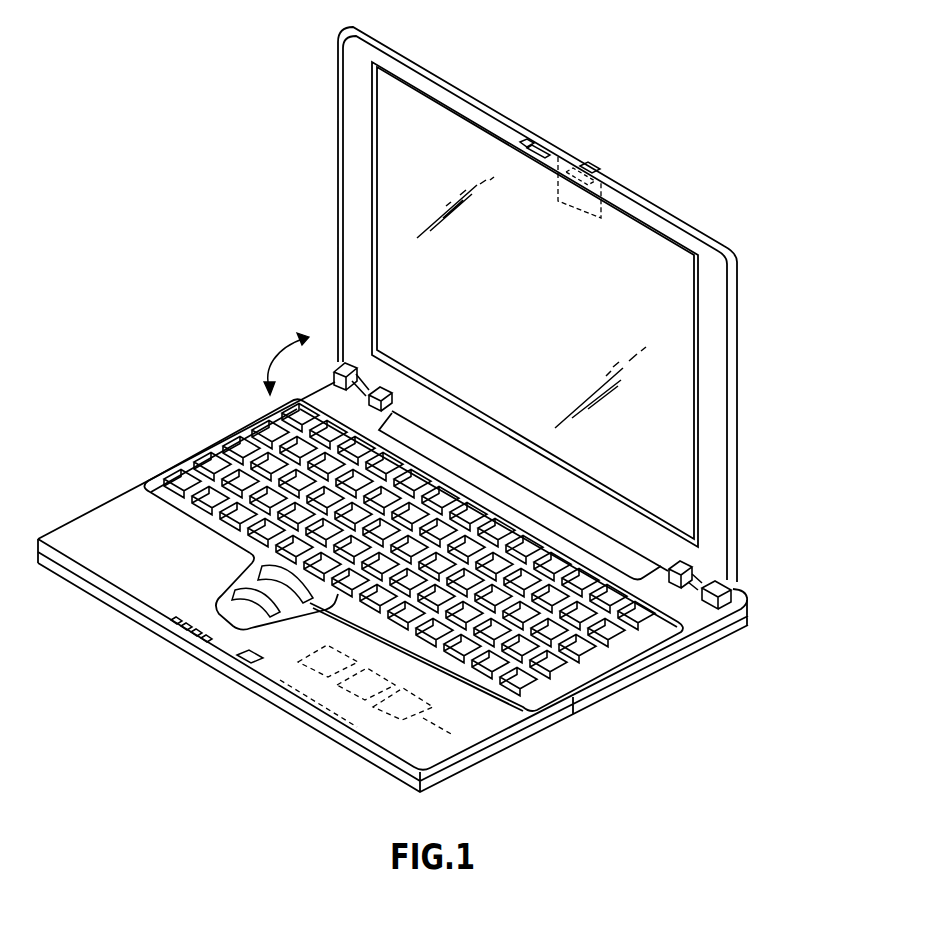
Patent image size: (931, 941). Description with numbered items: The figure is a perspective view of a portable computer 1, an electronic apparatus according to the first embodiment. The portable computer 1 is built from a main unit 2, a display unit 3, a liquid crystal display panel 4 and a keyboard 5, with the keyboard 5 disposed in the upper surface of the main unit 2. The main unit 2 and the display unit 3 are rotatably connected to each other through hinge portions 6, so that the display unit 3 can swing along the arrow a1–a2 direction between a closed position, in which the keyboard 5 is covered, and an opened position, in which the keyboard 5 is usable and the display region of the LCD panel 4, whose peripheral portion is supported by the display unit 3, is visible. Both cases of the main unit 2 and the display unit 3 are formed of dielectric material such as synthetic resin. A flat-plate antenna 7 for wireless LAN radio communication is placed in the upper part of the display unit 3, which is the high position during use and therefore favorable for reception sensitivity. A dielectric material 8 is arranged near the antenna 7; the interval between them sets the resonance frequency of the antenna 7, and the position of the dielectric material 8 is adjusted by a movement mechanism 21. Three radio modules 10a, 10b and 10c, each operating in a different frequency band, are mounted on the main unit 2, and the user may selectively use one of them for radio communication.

The portable computer 1 is at (751, 322).
The main unit 2 is at (116, 522).
The display unit 3 is at (347, 93).
The liquid crystal display panel 4 is at (392, 206).
The keyboard 5 is at (210, 465).
The hinge portions 6 is at (363, 360).
The antenna 7 is at (583, 154).
The dielectric material 8 is at (610, 182).
The movement mechanism 21 is at (593, 162).
The radio module 10a is at (267, 690).
The radio module 10b is at (305, 707).
The radio module 10c is at (340, 732).
The arrow direction a1 is at (271, 373).
The arrow direction a2 is at (298, 326).